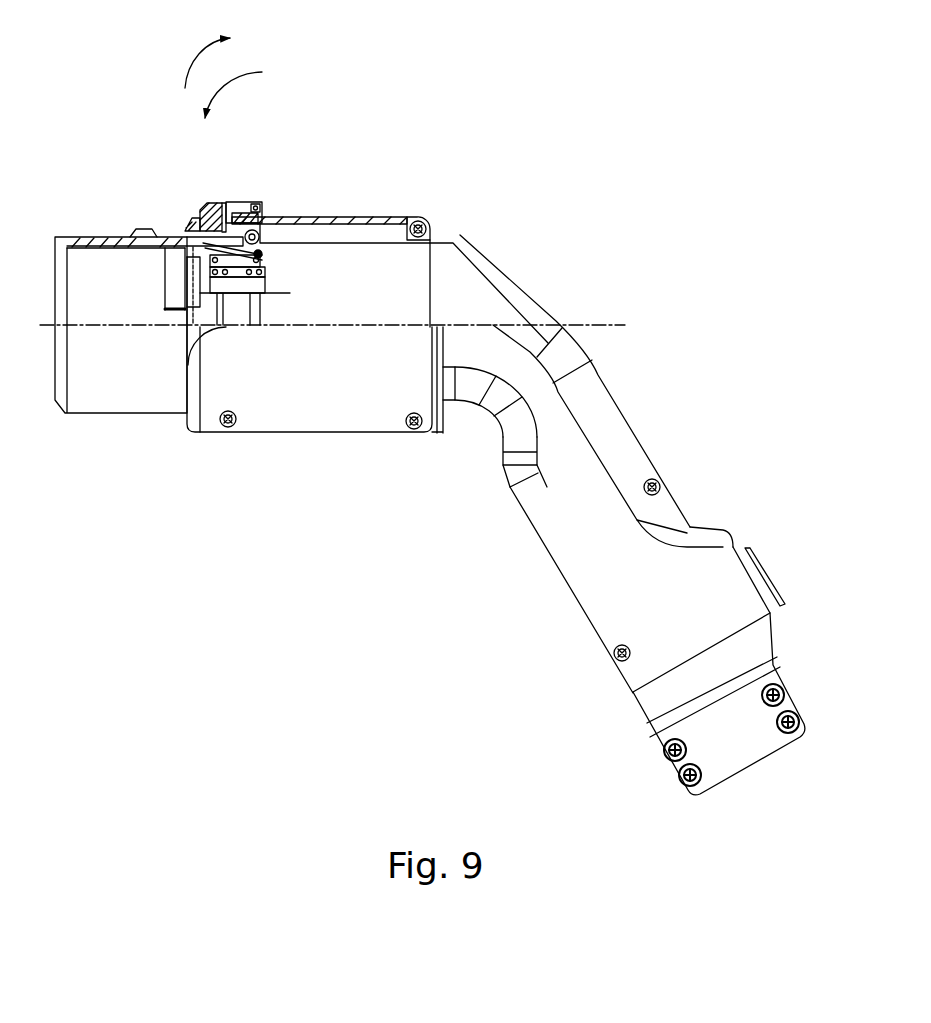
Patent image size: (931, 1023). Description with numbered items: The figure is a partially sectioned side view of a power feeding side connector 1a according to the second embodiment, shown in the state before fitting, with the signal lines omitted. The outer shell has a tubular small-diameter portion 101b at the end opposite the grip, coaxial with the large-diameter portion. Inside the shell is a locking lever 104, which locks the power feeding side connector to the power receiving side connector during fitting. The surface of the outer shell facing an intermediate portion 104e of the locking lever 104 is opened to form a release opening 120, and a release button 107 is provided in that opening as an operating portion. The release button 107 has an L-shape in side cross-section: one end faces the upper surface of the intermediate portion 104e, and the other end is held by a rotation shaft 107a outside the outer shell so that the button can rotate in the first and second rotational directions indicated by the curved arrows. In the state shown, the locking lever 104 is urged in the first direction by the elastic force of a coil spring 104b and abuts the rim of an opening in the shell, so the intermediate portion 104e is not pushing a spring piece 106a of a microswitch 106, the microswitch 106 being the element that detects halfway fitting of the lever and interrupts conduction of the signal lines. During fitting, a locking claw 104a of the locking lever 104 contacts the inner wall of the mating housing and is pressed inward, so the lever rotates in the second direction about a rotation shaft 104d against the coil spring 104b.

The power feeding side connector 1a is at (406, 120).
The small-diameter portion 101b is at (388, 216).
The locking lever 104 is at (175, 227).
The locking claw 104a is at (137, 227).
The coil spring 104b is at (259, 230).
The rotation shaft 104d is at (261, 255).
The intermediate portion 104e is at (212, 238).
The microswitch 106 is at (237, 298).
The spring piece 106a is at (215, 249).
The release button 107 is at (240, 200).
The rotation shaft 107a is at (259, 203).
The release opening 120 is at (197, 215).